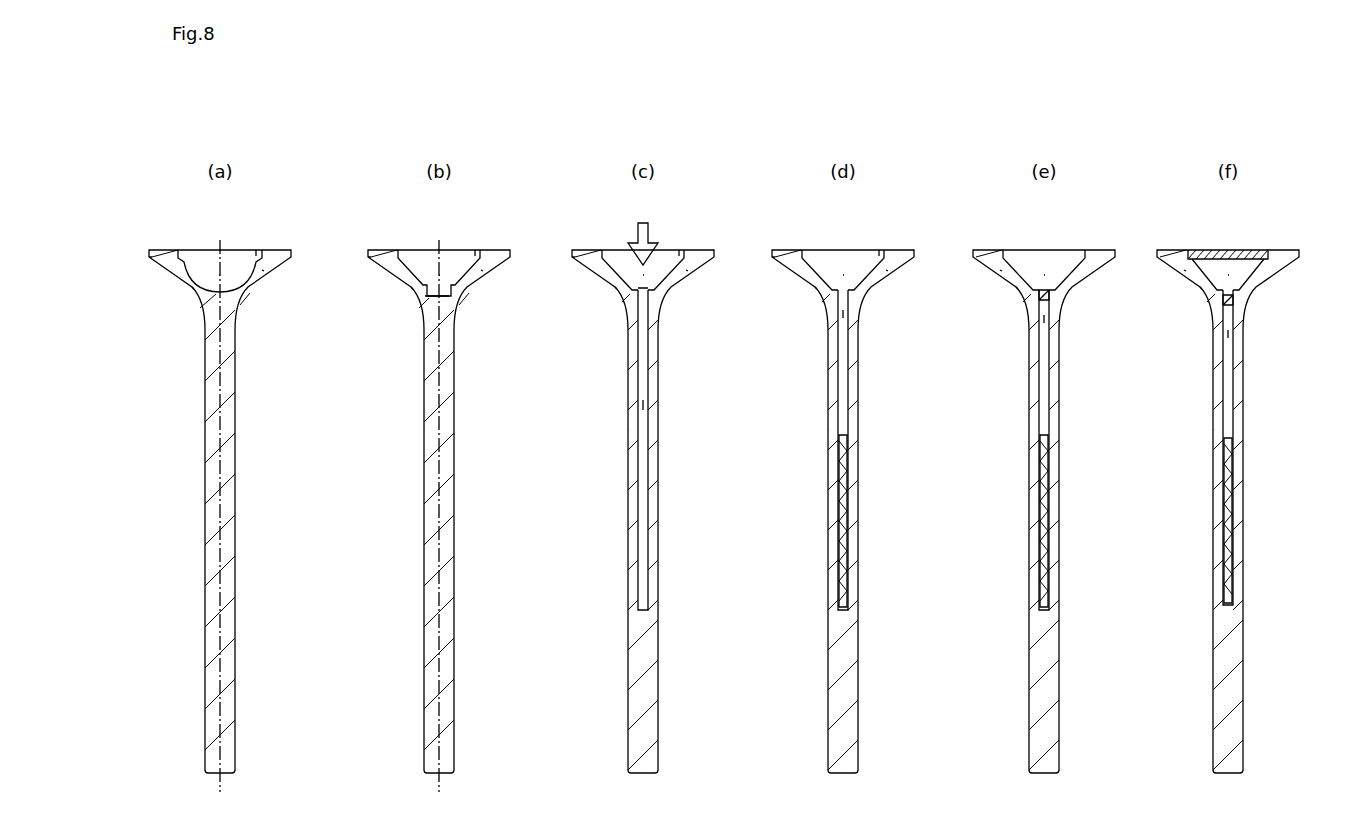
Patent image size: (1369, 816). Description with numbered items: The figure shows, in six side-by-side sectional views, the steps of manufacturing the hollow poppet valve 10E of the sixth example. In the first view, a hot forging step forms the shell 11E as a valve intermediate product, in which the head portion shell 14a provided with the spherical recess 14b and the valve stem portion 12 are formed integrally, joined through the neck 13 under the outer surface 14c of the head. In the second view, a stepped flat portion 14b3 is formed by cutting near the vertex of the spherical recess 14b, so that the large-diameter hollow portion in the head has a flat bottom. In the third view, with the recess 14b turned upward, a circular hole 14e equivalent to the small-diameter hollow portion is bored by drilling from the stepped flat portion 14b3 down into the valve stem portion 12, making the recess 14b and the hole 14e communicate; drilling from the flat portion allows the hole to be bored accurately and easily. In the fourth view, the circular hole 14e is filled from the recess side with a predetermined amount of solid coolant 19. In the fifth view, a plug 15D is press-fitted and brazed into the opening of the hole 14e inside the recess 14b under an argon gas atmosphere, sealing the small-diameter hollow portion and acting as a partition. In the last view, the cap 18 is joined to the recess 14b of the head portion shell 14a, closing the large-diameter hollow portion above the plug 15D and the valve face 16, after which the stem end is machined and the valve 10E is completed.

The valve stem portion 12 is at (1275, 567).
The neck portion 13 is at (1203, 288).
The head portion shell 14a is at (1192, 269).
The spherical recess 14b is at (1215, 288).
The stepped flat portion 14b3 is at (1234, 256).
The peripheral edge portion of valve head 14c is at (878, 262).
The circular hole 14e is at (935, 450).
The plug 15D is at (1233, 300).
The valve face 16 is at (775, 258).
The cap 18 is at (1246, 254).
The coolant 19 is at (1233, 519).
The shell 11E is at (1027, 429).
The hollow poppet valve 10E is at (1212, 429).